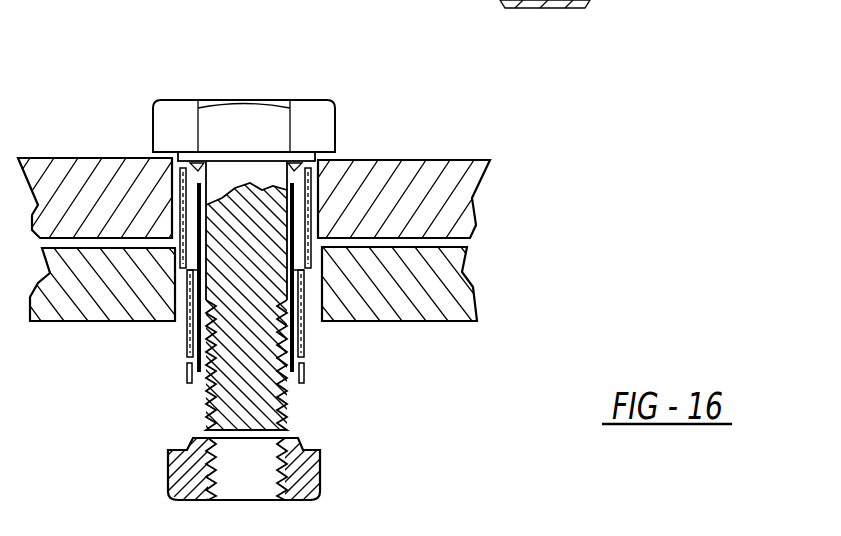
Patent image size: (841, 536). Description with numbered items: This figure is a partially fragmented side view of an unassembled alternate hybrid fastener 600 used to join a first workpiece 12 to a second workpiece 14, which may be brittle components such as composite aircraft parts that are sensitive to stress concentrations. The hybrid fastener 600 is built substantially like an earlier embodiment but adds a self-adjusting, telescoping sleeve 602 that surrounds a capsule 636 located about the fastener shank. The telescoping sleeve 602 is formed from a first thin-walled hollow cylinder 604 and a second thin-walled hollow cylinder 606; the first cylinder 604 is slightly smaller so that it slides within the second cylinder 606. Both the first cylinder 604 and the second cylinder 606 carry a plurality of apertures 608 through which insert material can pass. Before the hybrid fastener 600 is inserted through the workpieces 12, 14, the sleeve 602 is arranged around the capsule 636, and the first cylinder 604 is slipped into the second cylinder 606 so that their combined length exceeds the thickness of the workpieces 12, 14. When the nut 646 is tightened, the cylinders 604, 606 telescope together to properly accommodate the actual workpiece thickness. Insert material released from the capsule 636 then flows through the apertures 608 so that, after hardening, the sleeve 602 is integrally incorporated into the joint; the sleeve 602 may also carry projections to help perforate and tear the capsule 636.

The first workpiece 12 is at (447, 197).
The second workpiece 14 is at (455, 290).
The hybrid fastener 600 is at (144, 100).
The telescoping sleeve 602 is at (320, 212).
The first thin-walled hollow cylinder 604 is at (183, 337).
The second thin-walled hollow cylinder 606 is at (178, 210).
The apertures 608 is at (183, 208).
The capsule 636 is at (296, 333).
The nut 646 is at (305, 472).